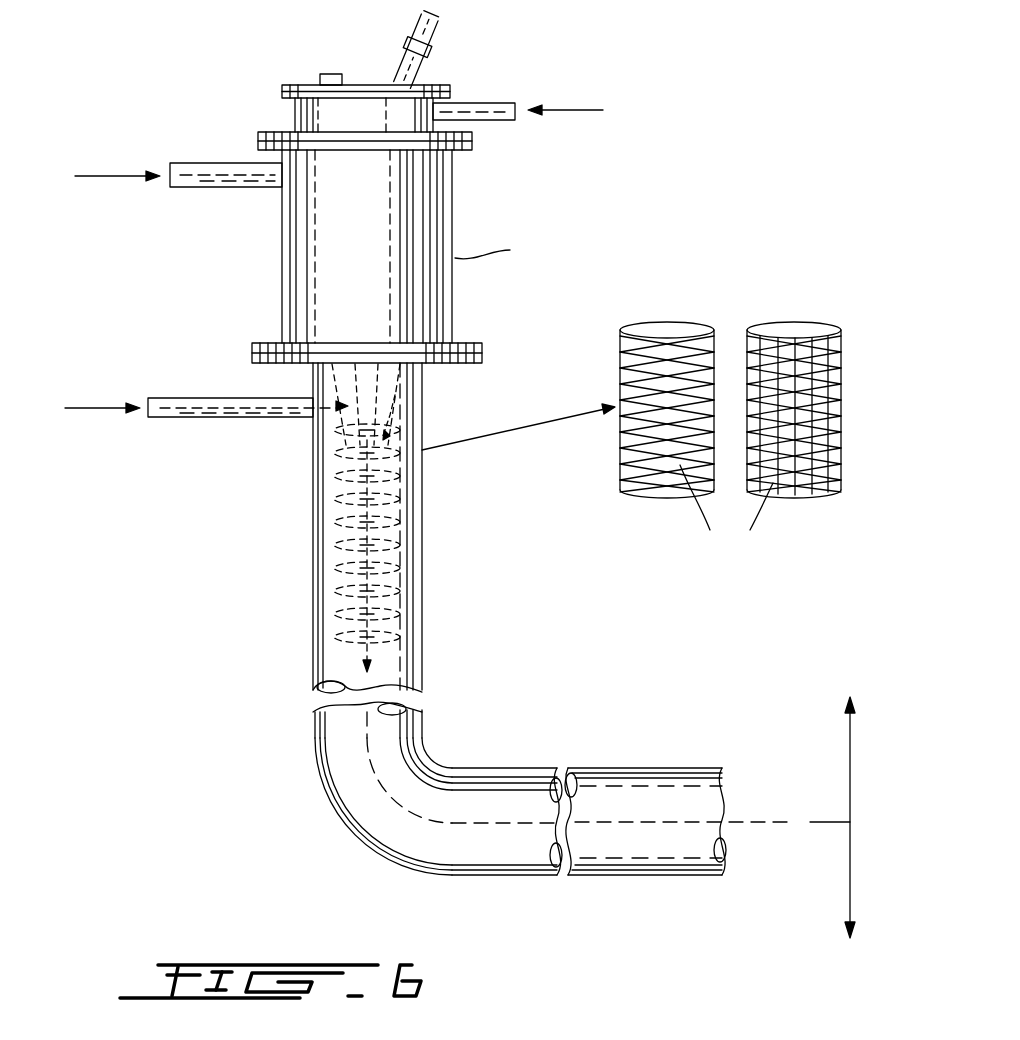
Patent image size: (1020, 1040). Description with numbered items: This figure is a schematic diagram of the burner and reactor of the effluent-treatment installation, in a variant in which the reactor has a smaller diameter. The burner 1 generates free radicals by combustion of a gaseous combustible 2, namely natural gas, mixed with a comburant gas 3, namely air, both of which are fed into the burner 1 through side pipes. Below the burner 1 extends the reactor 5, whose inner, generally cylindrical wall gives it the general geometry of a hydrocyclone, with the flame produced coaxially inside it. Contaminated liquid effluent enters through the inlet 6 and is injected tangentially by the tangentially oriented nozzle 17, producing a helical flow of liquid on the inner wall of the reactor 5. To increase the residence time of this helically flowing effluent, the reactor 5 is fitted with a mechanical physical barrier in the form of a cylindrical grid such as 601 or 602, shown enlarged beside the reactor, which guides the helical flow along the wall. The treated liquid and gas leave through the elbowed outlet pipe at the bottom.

The burner 1 is at (300, 262).
The gaseous combustible 2 is at (578, 110).
The comburant gas 3 is at (118, 172).
The reactor 5 is at (305, 548).
The inlet 6 is at (212, 412).
The tangentially oriented nozzle 17 is at (318, 448).
The cylindrical grid 601 is at (667, 326).
The cylindrical grid 602 is at (796, 326).